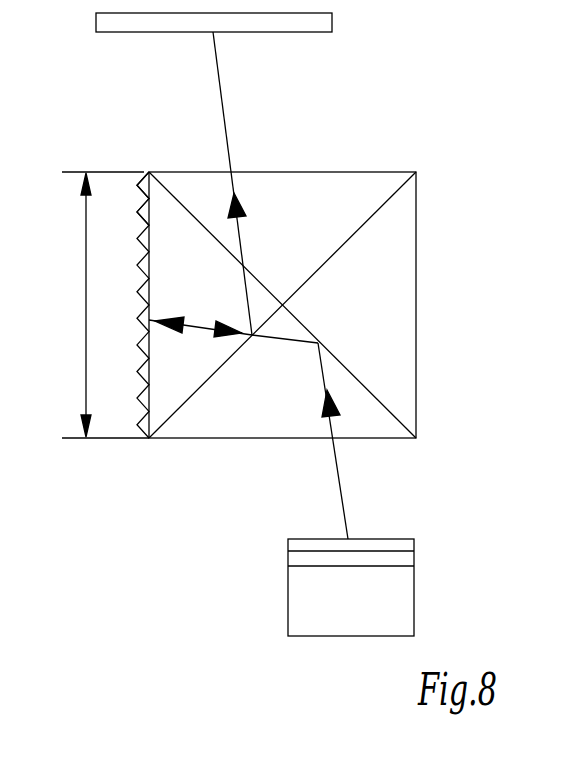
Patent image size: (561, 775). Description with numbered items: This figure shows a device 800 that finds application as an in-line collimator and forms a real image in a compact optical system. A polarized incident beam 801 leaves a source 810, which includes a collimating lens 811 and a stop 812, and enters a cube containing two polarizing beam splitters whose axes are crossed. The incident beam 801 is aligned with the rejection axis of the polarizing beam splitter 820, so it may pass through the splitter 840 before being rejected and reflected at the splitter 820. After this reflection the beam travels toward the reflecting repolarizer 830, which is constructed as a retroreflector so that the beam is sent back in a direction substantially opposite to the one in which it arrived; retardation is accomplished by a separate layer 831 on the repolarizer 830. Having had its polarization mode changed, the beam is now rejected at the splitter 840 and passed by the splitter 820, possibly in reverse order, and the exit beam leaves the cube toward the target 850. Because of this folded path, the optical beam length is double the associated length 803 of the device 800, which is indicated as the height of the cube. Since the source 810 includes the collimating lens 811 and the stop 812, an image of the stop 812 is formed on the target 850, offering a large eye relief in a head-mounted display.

The device 800 is at (437, 92).
The target 850 is at (292, 32).
The polarizing beam splitter 840 is at (347, 245).
The polarizing beam splitter 820 is at (347, 365).
The reflecting repolarizer 830 is at (146, 228).
The layer 831 is at (150, 207).
The length 803 is at (85, 288).
The incident beam 801 is at (343, 500).
The source 810 is at (415, 592).
The collimating lens 811 is at (288, 556).
The stop 812 is at (393, 538).